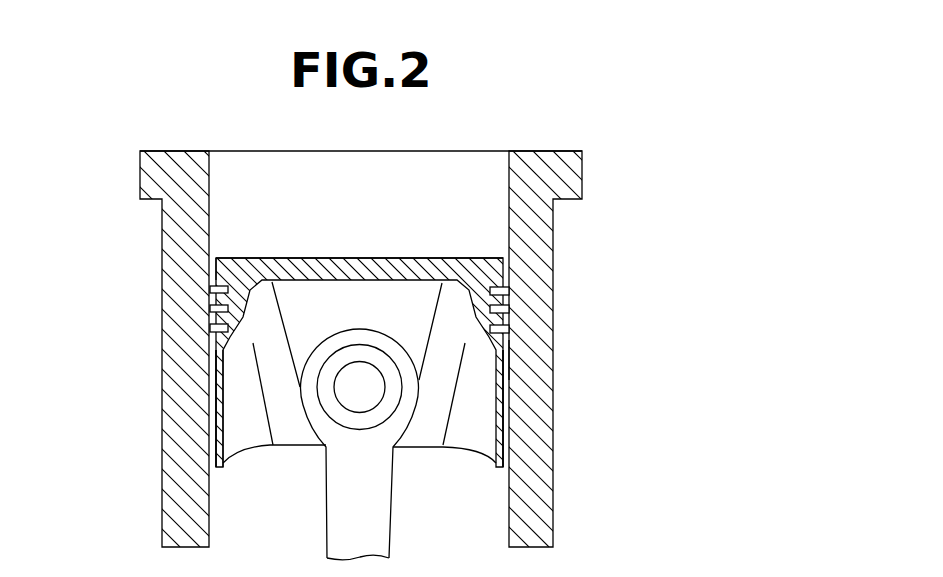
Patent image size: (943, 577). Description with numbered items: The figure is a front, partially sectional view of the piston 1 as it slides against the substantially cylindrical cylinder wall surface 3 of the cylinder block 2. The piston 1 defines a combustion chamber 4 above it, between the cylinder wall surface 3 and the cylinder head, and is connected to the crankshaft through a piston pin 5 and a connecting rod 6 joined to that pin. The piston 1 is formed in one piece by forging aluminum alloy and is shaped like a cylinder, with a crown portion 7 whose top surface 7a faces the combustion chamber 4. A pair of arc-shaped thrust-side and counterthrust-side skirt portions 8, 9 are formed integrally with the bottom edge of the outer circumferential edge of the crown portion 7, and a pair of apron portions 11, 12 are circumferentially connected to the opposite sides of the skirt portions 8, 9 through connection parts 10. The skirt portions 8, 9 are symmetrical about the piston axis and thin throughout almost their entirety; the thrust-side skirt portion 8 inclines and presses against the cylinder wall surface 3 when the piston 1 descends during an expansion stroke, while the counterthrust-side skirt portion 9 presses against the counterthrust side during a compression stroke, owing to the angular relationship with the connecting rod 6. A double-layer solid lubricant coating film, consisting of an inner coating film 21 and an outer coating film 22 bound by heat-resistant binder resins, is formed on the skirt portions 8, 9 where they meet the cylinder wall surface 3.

The piston 1 is at (212, 277).
The cylinder block 2 is at (542, 480).
The cylinder wall surface 3 is at (506, 361).
The combustion chamber 4 is at (412, 170).
The piston pin 5 is at (390, 410).
The connecting rod 6 is at (335, 535).
The crown portion 7 is at (292, 265).
The top surface 7a is at (366, 258).
The thrust-side skirt portion 8 is at (220, 409).
The counterthrust-side skirt portion 9 is at (502, 423).
The connection part 10 is at (475, 438).
The apron portion 11 is at (262, 430).
The apron portion 12 is at (277, 428).
The inner coating film 21 is at (367, 408).
The outer coating film 22 is at (200, 371).